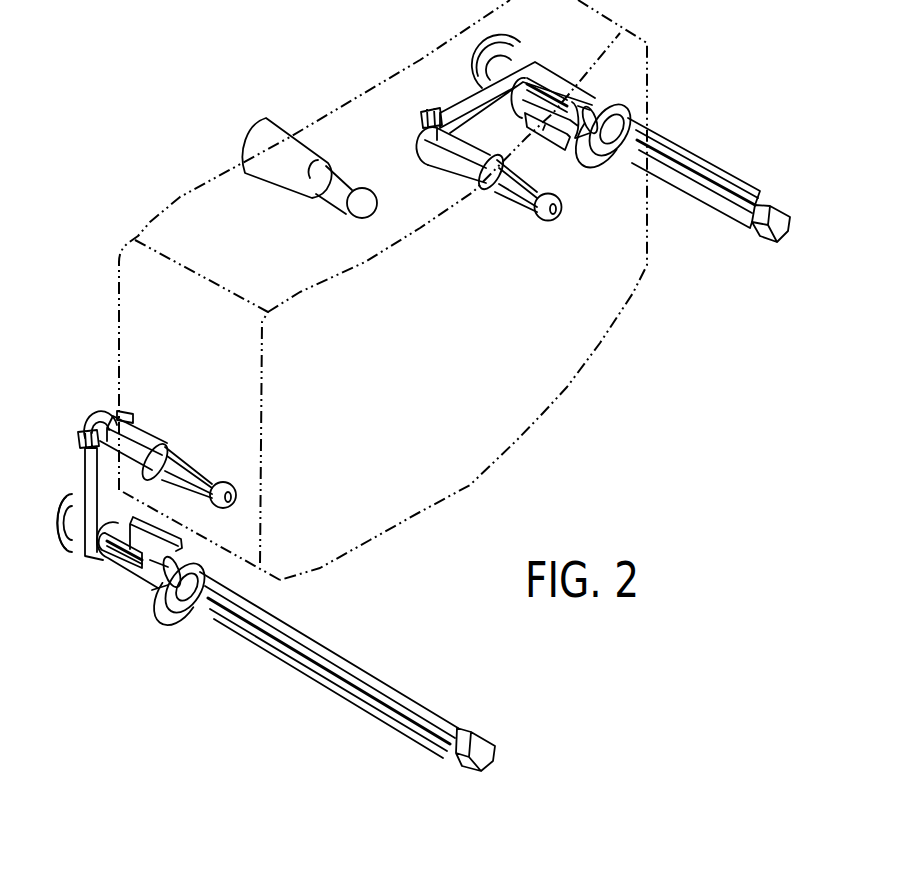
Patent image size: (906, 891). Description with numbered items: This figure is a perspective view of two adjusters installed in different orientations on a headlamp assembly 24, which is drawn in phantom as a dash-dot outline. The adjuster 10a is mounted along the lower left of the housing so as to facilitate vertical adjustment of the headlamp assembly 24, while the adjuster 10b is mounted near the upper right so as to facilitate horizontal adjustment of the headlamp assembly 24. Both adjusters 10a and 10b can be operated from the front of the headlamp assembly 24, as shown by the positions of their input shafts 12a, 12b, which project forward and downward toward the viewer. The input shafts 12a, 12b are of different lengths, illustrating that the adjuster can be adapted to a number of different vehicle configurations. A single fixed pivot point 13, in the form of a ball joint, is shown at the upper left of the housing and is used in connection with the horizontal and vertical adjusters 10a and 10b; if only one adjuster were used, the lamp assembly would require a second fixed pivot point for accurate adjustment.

The headlamp assembly 24 is at (94, 274).
The fixed pivot point 13 is at (267, 136).
The adjuster 10a is at (276, 591).
The adjuster 10b is at (603, 138).
The input shaft 12a is at (318, 668).
The input shaft 12b is at (700, 172).